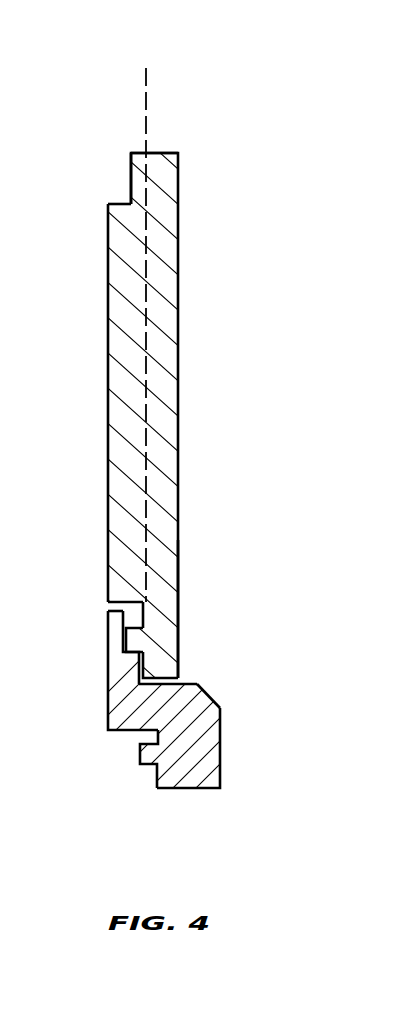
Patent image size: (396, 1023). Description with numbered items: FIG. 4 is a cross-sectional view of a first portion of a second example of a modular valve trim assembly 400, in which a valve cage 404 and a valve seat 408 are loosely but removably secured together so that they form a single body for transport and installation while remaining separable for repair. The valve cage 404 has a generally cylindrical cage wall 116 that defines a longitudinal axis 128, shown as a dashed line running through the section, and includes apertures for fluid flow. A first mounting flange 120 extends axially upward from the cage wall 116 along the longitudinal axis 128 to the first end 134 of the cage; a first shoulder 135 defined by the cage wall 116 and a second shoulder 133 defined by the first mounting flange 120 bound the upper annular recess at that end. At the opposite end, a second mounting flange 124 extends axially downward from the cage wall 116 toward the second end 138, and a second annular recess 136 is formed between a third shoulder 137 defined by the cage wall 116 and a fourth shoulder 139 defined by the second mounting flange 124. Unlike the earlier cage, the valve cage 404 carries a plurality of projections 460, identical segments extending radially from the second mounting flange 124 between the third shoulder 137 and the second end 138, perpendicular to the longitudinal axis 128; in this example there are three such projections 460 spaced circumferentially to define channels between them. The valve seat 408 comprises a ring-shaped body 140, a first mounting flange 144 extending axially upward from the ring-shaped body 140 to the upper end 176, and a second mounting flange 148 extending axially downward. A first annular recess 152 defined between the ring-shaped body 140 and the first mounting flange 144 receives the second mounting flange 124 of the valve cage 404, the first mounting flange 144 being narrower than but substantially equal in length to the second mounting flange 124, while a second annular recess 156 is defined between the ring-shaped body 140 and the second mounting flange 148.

The modular valve trim assembly 400 is at (228, 40).
The valve cage 404 is at (232, 246).
The valve seat 408 is at (138, 802).
The cage wall 116 is at (158, 420).
The first mounting flange 120 is at (163, 160).
The second mounting flange 124 is at (168, 638).
The longitudinal axis 128 is at (146, 92).
The second shoulder 133 is at (134, 186).
The first end 134 is at (160, 158).
The first shoulder 135 is at (108, 210).
The second annular recess 136 is at (178, 573).
The third shoulder 137 is at (130, 602).
The second end 138 is at (183, 673).
The fourth shoulder 139 is at (140, 603).
The ring-shaped body 140 is at (165, 712).
The first mounting flange 144 is at (128, 666).
The second mounting flange 148 is at (195, 778).
The first annular recess 152 is at (199, 676).
The second annular recess 156 is at (120, 750).
The upper end 176 is at (117, 608).
The projections 460 is at (153, 640).